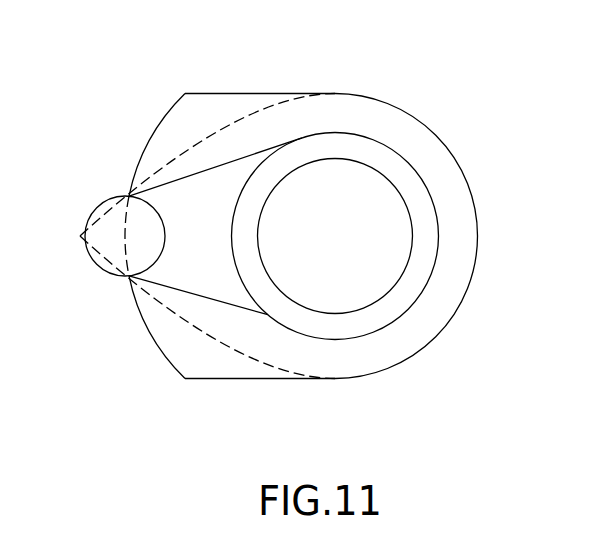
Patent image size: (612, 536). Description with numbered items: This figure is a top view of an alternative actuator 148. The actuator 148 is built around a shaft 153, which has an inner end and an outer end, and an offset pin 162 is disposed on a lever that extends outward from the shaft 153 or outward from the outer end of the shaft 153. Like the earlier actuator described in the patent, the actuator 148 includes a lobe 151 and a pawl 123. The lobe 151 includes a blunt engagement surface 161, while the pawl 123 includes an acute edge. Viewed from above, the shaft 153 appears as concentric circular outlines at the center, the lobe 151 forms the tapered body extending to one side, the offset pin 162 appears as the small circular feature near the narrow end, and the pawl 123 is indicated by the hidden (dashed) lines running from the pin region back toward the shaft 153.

The actuator 148 is at (420, 78).
The lobe 151 is at (150, 119).
The shaft 153 is at (450, 237).
The blunt engagement surface 161 is at (147, 185).
The offset pin 162 is at (100, 270).
The pawl 123 is at (212, 325).